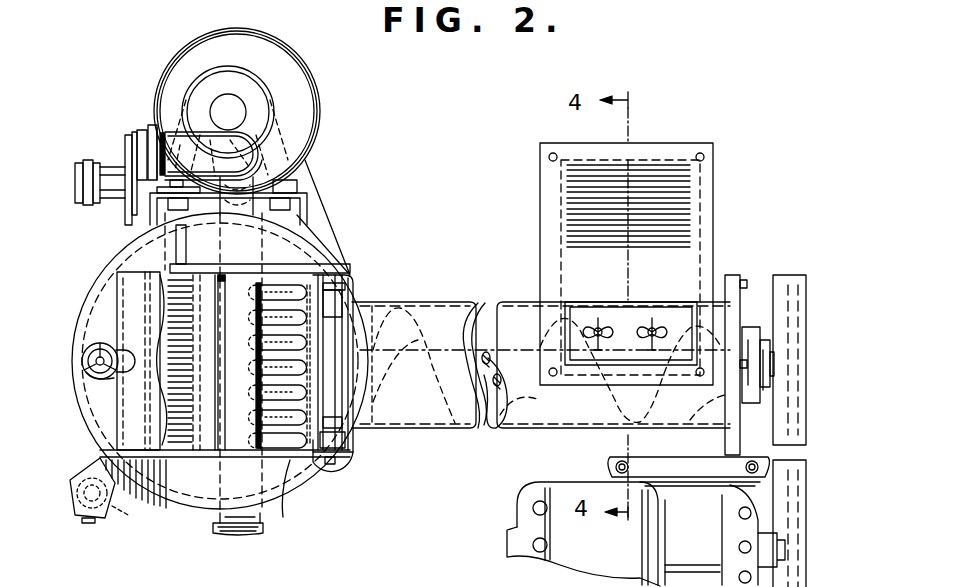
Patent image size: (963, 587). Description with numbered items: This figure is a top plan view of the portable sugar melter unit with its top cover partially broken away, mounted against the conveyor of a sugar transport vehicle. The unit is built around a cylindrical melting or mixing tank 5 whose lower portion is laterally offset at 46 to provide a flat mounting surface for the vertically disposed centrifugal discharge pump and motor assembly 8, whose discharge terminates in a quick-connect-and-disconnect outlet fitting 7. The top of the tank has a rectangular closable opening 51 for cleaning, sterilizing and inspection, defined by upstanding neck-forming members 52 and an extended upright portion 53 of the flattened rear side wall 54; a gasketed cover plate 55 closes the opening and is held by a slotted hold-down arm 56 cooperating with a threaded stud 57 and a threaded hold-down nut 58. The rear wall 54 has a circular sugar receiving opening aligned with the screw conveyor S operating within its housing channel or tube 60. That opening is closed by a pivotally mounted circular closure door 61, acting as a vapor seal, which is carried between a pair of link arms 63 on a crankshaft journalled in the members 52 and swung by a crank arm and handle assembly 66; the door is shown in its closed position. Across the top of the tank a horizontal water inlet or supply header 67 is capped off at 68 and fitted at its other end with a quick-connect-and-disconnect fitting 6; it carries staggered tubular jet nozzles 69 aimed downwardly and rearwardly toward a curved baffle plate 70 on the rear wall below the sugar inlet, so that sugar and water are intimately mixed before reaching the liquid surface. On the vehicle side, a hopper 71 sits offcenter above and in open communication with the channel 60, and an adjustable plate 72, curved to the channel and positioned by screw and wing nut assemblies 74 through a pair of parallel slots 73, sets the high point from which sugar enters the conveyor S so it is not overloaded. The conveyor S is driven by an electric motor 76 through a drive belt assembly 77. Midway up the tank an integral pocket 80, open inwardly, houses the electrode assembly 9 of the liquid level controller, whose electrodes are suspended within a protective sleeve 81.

The melting or mixing tank 5 is at (92, 290).
The quick-connect-and-disconnect fitting 6 is at (150, 135).
The quick-connect-and-disconnect outlet fitting 7 is at (90, 160).
The centrifugal discharge pump and motor assembly 8 is at (280, 69).
The electrode assembly 9 is at (70, 506).
The laterally offset lower portion 46 is at (325, 208).
The closable opening 51 is at (185, 382).
The neck-forming members 52 is at (150, 280).
The extended upright portion 53 is at (355, 450).
The flattened rear side wall 54 is at (355, 290).
The cover plate 55 is at (160, 333).
The slotted hold-down arm 56 is at (100, 343).
The threaded stud 57 is at (86, 356).
The threaded hold-down nut 58 is at (88, 372).
The housing channel or tube 60 is at (455, 428).
The circular closure door 61 is at (345, 362).
The link arms 63 is at (345, 300).
The crank arm and handle assembly 66 is at (197, 264).
The water inlet or supply header 67 is at (258, 176).
The capped end 68 is at (217, 535).
The tubular jet nozzles 69 is at (295, 315).
The curved baffle plate 70 is at (291, 496).
The hopper 71 is at (690, 180).
The adjustable plate 72 is at (628, 310).
The parallel slots 73 is at (600, 320).
The screw and wing nut assemblies 74 is at (596, 320).
The electric motor 76 is at (616, 545).
The drive belt assembly 77 is at (790, 422).
The integral pocket 80 is at (90, 463).
The protective sleeve 81 is at (133, 518).
The screw conveyor S is at (420, 335).